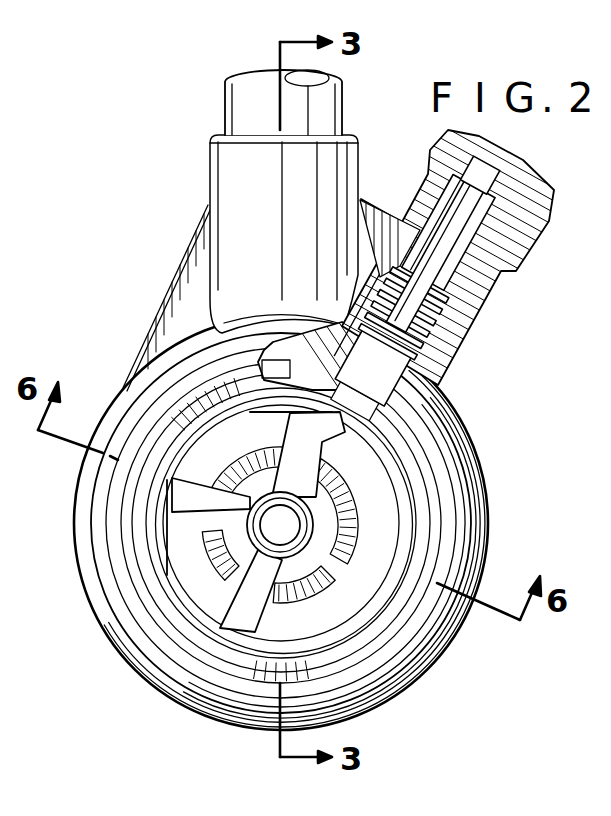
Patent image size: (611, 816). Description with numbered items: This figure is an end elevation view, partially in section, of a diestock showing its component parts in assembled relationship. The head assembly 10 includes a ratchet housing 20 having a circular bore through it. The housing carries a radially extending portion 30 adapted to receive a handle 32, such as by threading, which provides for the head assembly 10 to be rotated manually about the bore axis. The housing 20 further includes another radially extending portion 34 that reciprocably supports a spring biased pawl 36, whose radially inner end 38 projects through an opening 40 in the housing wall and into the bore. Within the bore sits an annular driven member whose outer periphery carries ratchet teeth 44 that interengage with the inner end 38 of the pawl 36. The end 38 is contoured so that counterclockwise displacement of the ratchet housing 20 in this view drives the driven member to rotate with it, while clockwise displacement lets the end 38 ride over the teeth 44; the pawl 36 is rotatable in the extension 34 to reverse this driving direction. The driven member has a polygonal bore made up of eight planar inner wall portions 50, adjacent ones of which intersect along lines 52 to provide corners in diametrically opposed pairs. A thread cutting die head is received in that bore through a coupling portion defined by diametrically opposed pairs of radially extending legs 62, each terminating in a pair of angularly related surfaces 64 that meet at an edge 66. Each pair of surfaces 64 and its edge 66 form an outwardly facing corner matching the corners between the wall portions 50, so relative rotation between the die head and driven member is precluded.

The head assembly 10 is at (160, 265).
The ratchet housing 20 is at (168, 380).
The radially extending portion 30 is at (238, 165).
The handle 32 is at (250, 103).
The radially extending portion 34 is at (472, 300).
The spring biased pawl 36 is at (473, 233).
The radially inner end 38 is at (395, 370).
The opening 40 is at (340, 322).
The ratchet teeth 44 is at (393, 397).
The planar inner wall portions 50 is at (262, 418).
The lines 52 is at (443, 425).
The radially extending legs 62 is at (240, 555).
The angularly related surfaces 64 is at (187, 460).
The edge 66 is at (163, 478).